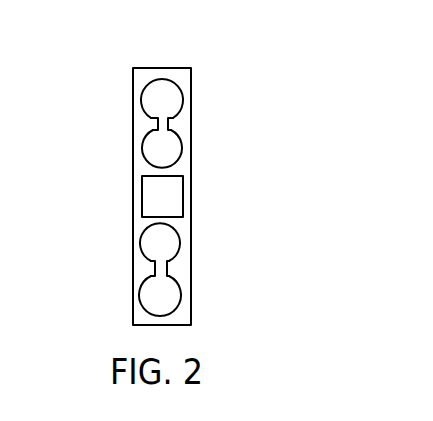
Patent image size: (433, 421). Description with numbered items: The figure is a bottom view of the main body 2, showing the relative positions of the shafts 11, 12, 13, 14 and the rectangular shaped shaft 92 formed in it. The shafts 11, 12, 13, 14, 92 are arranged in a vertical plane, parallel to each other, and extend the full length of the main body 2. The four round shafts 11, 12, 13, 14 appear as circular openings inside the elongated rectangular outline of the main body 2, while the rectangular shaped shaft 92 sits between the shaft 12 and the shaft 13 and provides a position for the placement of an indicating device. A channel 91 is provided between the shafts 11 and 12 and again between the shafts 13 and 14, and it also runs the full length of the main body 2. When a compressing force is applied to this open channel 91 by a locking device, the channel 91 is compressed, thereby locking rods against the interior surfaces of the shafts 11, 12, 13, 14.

The main body 2 is at (194, 73).
The shaft 11 is at (184, 102).
The shaft 12 is at (183, 156).
The shaft 13 is at (182, 243).
The shaft 14 is at (181, 298).
The channel 91 is at (157, 120).
The rectangular shaped shaft 92 is at (183, 198).